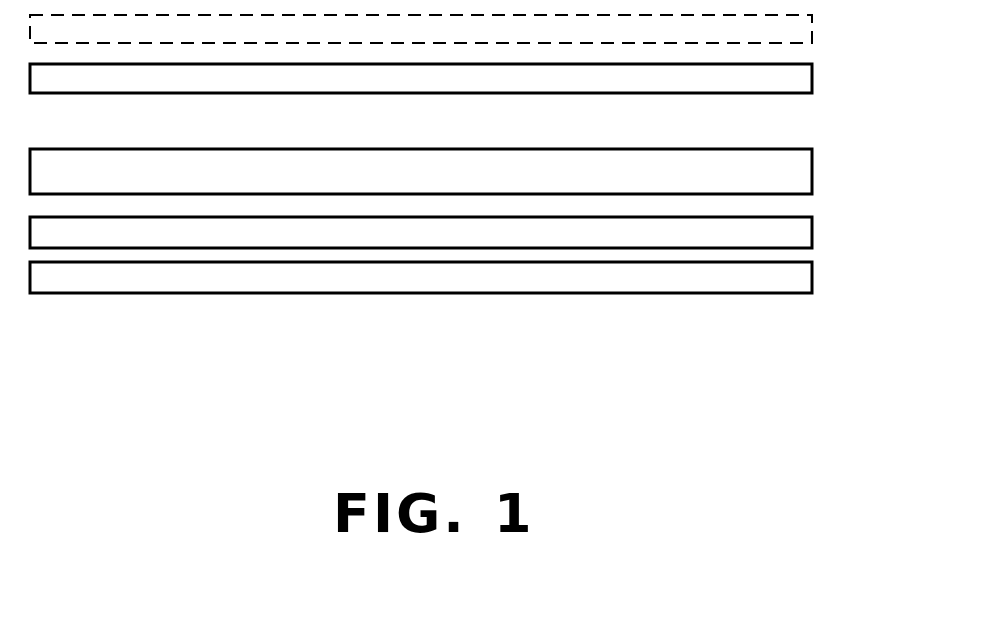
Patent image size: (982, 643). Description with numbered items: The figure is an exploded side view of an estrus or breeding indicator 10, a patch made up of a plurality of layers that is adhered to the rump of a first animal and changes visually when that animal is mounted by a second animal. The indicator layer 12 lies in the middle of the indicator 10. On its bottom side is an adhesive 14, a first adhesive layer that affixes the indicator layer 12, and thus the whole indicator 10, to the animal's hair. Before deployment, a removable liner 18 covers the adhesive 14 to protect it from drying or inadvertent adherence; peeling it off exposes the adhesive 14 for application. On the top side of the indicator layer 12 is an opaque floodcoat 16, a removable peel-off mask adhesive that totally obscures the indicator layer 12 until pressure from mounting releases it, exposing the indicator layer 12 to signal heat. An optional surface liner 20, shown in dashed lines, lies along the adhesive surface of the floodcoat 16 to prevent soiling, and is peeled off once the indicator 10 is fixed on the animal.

The indicator 10 is at (600, 346).
The indicator layer 12 is at (797, 175).
The adhesive 14 is at (797, 238).
The floodcoat 16 is at (797, 82).
The liner 18 is at (797, 281).
The surface liner 20 is at (797, 34).